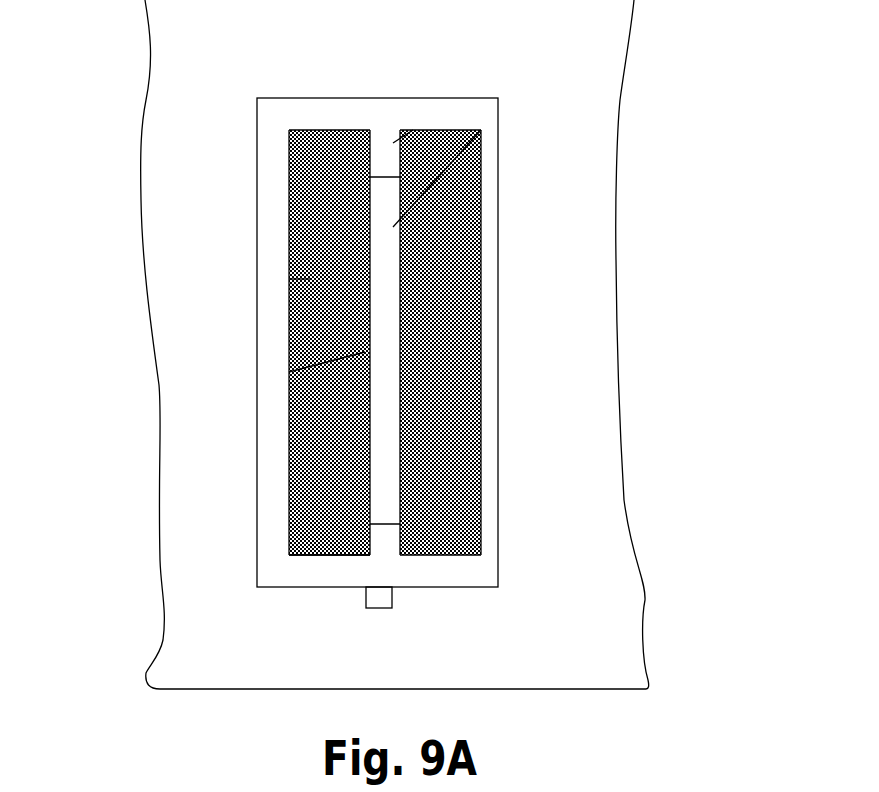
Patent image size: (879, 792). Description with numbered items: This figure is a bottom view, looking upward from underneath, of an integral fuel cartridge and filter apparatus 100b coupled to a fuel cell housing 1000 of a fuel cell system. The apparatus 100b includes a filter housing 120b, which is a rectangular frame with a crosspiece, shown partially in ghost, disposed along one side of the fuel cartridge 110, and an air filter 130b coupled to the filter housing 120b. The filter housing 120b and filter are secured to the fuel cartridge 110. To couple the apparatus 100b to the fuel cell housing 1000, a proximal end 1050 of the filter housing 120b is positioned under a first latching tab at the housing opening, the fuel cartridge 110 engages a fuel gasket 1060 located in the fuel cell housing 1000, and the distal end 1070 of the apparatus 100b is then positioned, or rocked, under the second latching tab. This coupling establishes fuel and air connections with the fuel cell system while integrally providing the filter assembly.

The fuel cell housing 1000 is at (497, 343).
The distal end 1070 is at (255, 98).
The integral fuel cartridge and filter apparatus 100b is at (506, 266).
The filter housing 120b is at (481, 130).
The air filter 130b is at (289, 279).
The fuel cartridge 110 is at (289, 372).
The proximal end 1050 is at (288, 556).
The fuel gasket 1060 is at (443, 553).